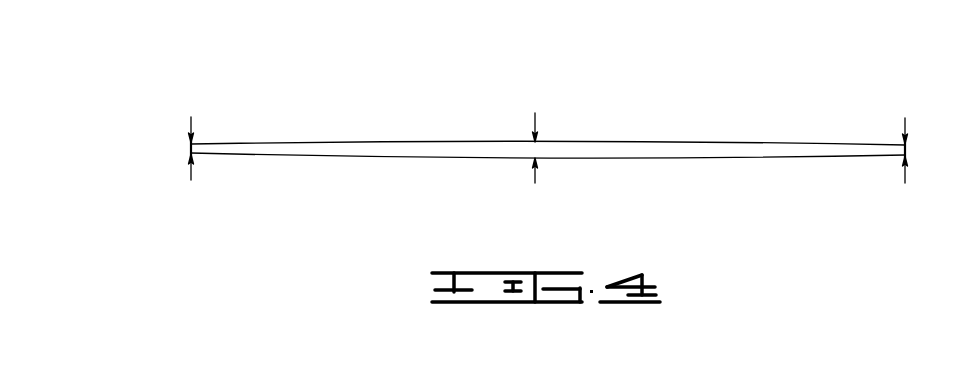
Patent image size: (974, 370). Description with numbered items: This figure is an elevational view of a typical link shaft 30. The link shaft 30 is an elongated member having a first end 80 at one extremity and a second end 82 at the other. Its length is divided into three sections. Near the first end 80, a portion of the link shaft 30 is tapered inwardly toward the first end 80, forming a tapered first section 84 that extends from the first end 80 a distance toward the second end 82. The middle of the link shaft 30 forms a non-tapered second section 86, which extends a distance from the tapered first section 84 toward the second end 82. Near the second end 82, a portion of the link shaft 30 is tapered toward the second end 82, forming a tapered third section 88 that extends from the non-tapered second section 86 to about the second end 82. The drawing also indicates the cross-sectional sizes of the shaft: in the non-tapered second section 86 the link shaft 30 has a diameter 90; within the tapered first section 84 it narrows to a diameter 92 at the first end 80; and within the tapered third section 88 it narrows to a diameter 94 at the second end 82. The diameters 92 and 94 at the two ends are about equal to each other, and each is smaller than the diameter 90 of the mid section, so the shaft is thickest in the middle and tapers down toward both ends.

The link shaft 30 is at (647, 159).
The first end 80 is at (188, 148).
The second end 82 is at (908, 152).
The tapered first section 84 is at (190, 108).
The non-tapered second section 86 is at (307, 106).
The tapered third section 88 is at (792, 106).
The diameter 90 is at (535, 183).
The diameter 92 is at (192, 180).
The diameter 94 is at (905, 183).